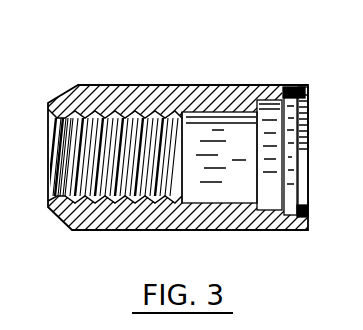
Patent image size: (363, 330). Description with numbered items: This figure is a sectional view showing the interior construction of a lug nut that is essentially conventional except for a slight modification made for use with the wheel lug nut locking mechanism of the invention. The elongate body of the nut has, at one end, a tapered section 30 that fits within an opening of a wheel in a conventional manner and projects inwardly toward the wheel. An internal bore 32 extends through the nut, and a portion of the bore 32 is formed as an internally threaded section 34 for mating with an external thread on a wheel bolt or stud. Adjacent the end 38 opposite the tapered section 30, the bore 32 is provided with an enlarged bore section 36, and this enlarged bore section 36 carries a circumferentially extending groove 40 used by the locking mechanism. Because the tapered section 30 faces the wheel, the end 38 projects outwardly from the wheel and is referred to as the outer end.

The tapered section 30 is at (61, 102).
The internal bore 32 is at (222, 128).
The internally threaded section 34 is at (150, 118).
The enlarged bore section 36 is at (270, 198).
The end 38 is at (328, 63).
The circumferentially extending groove 40 is at (292, 197).